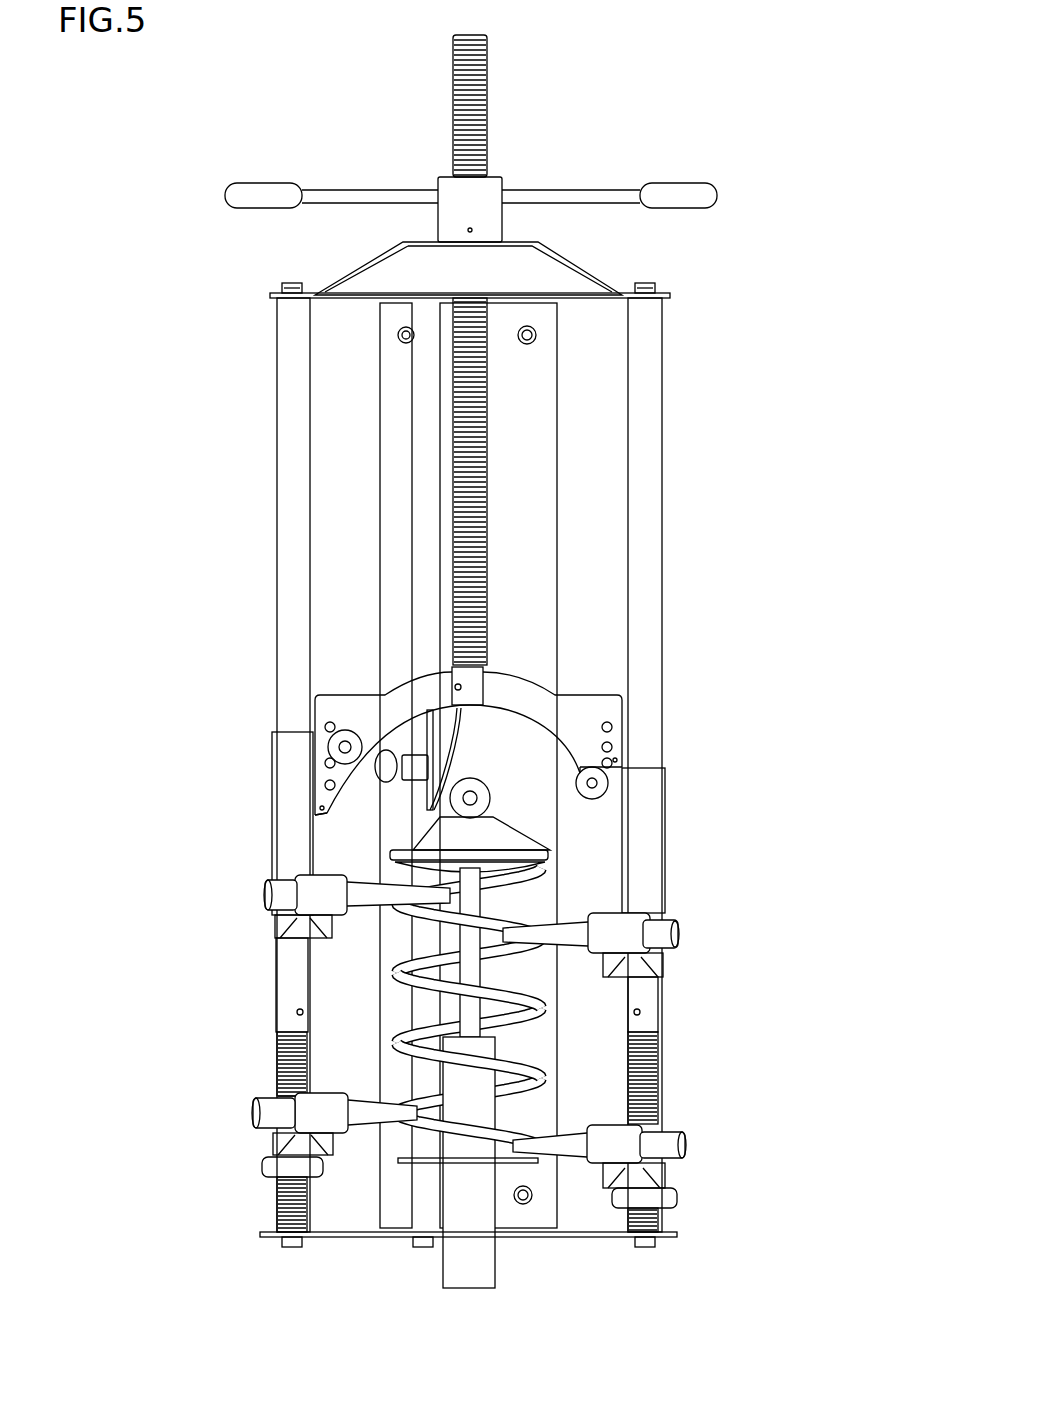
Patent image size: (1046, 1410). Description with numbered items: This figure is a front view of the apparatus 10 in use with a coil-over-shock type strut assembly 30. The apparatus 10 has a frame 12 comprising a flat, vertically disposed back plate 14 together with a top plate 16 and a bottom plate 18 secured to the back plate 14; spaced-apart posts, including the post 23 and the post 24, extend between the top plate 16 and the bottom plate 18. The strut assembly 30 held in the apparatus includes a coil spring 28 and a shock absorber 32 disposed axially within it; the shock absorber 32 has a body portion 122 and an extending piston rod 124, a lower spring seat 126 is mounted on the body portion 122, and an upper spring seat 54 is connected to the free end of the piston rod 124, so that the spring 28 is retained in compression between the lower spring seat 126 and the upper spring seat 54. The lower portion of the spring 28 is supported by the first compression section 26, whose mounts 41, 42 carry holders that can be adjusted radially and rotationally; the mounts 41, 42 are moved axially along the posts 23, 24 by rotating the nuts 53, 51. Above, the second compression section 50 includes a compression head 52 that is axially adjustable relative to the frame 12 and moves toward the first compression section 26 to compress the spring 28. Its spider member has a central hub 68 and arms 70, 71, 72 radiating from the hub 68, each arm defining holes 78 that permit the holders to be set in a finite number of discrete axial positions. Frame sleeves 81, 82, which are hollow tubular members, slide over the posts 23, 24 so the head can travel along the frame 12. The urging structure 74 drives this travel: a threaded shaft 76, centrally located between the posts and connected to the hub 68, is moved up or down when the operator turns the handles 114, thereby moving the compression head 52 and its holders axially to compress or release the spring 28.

The apparatus 10 is at (675, 72).
The frame 12 is at (222, 382).
The back plate 14 is at (550, 415).
The top plate 16 is at (565, 262).
The bottom plate 18 is at (350, 1240).
The post 23 is at (277, 543).
The post 24 is at (662, 420).
The first compression section 26 is at (238, 1075).
The coil spring 28 is at (521, 1092).
The strut assembly 30 is at (562, 867).
The shock absorber 32 is at (490, 1248).
The mount 41 is at (270, 1137).
The mount 42 is at (665, 1163).
The second compression section 50 is at (238, 768).
The nut 51 is at (672, 1203).
The compression head 52 is at (248, 842).
The nut 53 is at (262, 1175).
The upper spring seat 54 is at (395, 870).
The central hub 68 is at (482, 680).
The arm 70 is at (350, 703).
The arm 71 is at (575, 703).
The arm 72 is at (455, 722).
The urging structure 74 is at (548, 140).
The threaded shaft 76 is at (455, 135).
The holes 78 is at (610, 725).
The frame sleeve 81 is at (278, 750).
The frame sleeve 82 is at (667, 898).
The handles 114 is at (347, 190).
The body portion 122 is at (450, 1260).
The piston rod 124 is at (460, 1008).
The lower spring seat 126 is at (412, 1160).